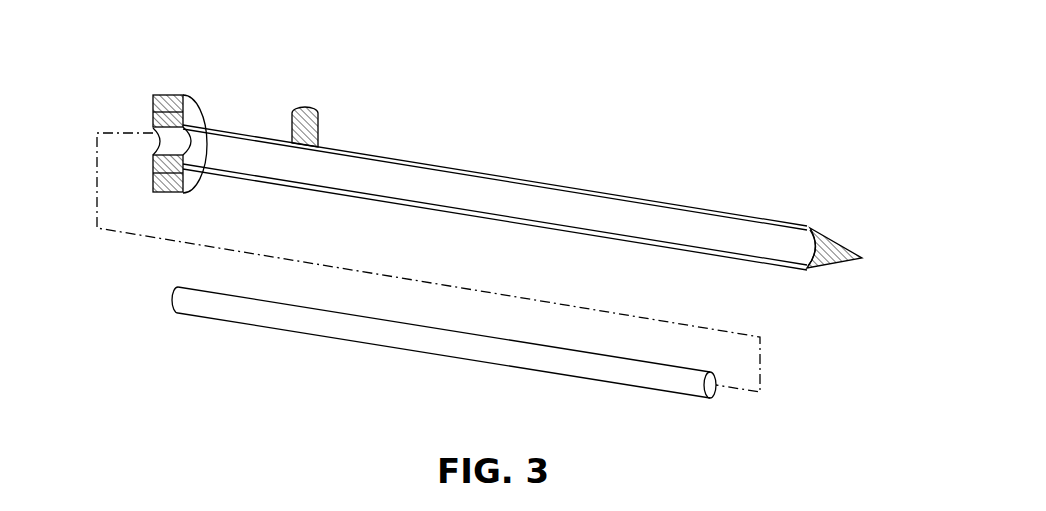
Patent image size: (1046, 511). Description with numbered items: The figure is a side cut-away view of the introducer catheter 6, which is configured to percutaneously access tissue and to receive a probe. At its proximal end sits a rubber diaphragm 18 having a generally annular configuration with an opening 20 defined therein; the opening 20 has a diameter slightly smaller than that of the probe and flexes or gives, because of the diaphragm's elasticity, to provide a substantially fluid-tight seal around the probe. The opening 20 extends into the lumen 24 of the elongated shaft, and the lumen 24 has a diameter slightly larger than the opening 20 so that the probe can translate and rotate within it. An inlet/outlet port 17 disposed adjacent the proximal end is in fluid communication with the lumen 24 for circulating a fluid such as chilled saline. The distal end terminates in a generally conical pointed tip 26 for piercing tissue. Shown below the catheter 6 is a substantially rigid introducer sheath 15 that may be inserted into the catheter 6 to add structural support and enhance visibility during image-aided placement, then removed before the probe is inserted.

The catheter 6 is at (707, 190).
The introducer sheath 15 is at (437, 355).
The inlet/outlet port 17 is at (320, 125).
The diaphragm 18 is at (173, 94).
The opening 20 is at (148, 130).
The lumen 24 is at (591, 203).
The pointed tip 26 is at (840, 240).